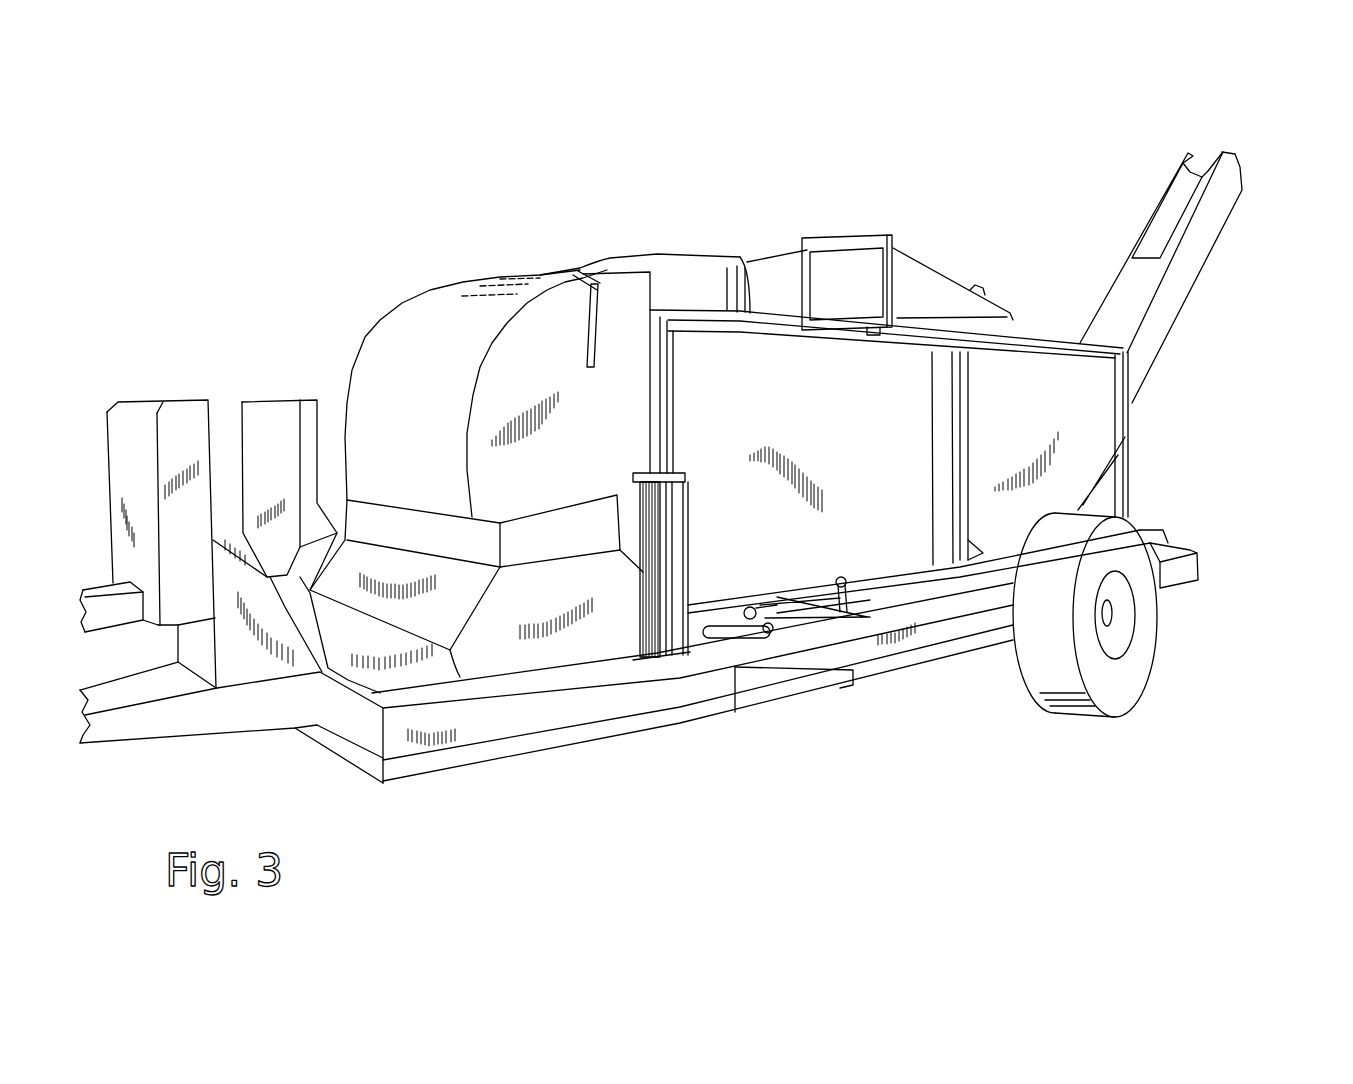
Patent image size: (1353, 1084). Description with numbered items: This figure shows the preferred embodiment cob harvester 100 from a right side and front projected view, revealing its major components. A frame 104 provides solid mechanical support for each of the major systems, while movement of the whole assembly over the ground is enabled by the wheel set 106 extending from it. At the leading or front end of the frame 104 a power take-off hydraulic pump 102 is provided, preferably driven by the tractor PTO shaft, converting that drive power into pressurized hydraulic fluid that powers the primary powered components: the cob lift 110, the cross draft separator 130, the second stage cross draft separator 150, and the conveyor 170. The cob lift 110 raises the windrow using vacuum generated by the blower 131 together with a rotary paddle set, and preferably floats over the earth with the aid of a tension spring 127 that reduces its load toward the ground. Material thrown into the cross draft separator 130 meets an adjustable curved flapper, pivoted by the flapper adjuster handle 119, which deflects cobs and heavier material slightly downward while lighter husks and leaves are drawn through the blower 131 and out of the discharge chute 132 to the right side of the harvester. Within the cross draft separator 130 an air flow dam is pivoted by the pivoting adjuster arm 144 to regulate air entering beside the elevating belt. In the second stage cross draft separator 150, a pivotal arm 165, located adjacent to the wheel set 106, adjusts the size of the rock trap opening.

The cob harvester 100 is at (719, 802).
The power take-off hydraulic pump 102 is at (175, 380).
The frame 104 is at (476, 772).
The wheel set 106 is at (1115, 724).
The cob lift 110 is at (406, 286).
The flapper adjuster handle 119 is at (597, 268).
The tension spring 127 is at (663, 658).
The cross draft separator 130 is at (698, 210).
The blower 131 is at (653, 265).
The discharge chute 132 is at (926, 280).
The pivoting adjuster arm 144 is at (757, 645).
The second stage cross draft separator 150 is at (990, 259).
The pivotal arm 165 is at (960, 583).
The conveyor 170 is at (1250, 136).